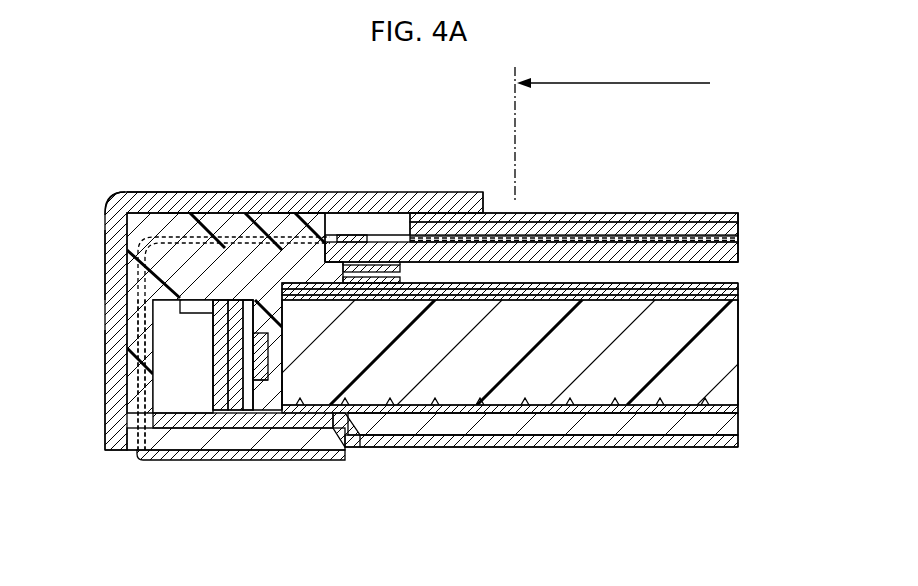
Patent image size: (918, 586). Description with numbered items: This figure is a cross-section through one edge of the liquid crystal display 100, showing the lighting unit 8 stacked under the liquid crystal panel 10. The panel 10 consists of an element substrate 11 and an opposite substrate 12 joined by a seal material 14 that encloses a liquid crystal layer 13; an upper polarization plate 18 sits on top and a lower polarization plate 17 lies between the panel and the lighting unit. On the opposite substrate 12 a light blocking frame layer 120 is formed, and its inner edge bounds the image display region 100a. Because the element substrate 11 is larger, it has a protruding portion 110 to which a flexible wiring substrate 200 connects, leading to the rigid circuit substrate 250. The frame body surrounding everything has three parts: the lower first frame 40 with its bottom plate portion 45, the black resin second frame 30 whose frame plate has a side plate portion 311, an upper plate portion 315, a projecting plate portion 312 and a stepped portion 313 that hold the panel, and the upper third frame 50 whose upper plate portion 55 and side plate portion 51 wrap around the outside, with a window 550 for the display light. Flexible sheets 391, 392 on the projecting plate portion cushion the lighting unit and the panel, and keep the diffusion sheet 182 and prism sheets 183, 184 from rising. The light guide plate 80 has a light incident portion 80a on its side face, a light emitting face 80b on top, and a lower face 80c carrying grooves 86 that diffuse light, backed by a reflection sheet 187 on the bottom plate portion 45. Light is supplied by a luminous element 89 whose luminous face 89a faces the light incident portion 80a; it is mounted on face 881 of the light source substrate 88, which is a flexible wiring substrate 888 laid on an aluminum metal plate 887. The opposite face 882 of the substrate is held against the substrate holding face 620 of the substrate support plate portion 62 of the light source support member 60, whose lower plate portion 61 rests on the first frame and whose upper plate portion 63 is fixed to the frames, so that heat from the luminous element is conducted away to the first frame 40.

The liquid crystal display 100 is at (461, 81).
The image display region 100a is at (710, 86).
The third frame 50 is at (128, 190).
The upper plate portion 55 is at (146, 195).
The upper plate portion 63 is at (217, 195).
The upper plate portion 315 is at (110, 205).
The side plate portion 51 is at (112, 258).
The side plate portion 311 is at (137, 390).
The substrate support plate portion 62 is at (240, 236).
The face 882 is at (187, 236).
The face 881 is at (288, 236).
The second frame 30 is at (150, 290).
The substrate holding face 620 is at (222, 360).
The flexible wiring substrate 888 is at (242, 415).
The metal plate 887 is at (220, 428).
The light source substrate 88 is at (257, 510).
The luminous element 89 is at (262, 382).
The luminous face 89a is at (268, 410).
The light source support member 60 is at (168, 455).
The lower plate portion 61 is at (175, 440).
The first frame 40 is at (398, 422).
The bottom plate portion 45 is at (437, 447).
The circuit substrate 250 is at (477, 447).
The light guide plate 80 is at (590, 383).
The light incident portion 80a is at (283, 413).
The light emitting face 80b is at (702, 293).
The lower face 80c is at (635, 412).
The groove 86 is at (705, 440).
The reflection sheet 187 is at (668, 420).
The prism sheet 184 is at (745, 285).
The prism sheet 183 is at (745, 291).
The diffusion sheet 182 is at (745, 297).
The lighting unit 8 is at (812, 222).
The liquid crystal panel 10 is at (660, 160).
The seal material 14 is at (530, 213).
The element substrate 11 is at (565, 228).
The liquid crystal layer 13 is at (598, 238).
The opposite substrate 12 is at (626, 255).
The upper polarization plate 18 is at (672, 230).
The lower polarization plate 17 is at (690, 262).
The flexible wiring substrate 200 is at (345, 200).
The stepped portion 313 is at (336, 197).
The window 550 is at (484, 205).
The protruding portion 110 is at (380, 268).
The flexible sheet 391 is at (367, 262).
The flexible sheet 392 is at (403, 278).
The projecting plate portion 312 is at (500, 265).
The frame layer 120 is at (527, 284).